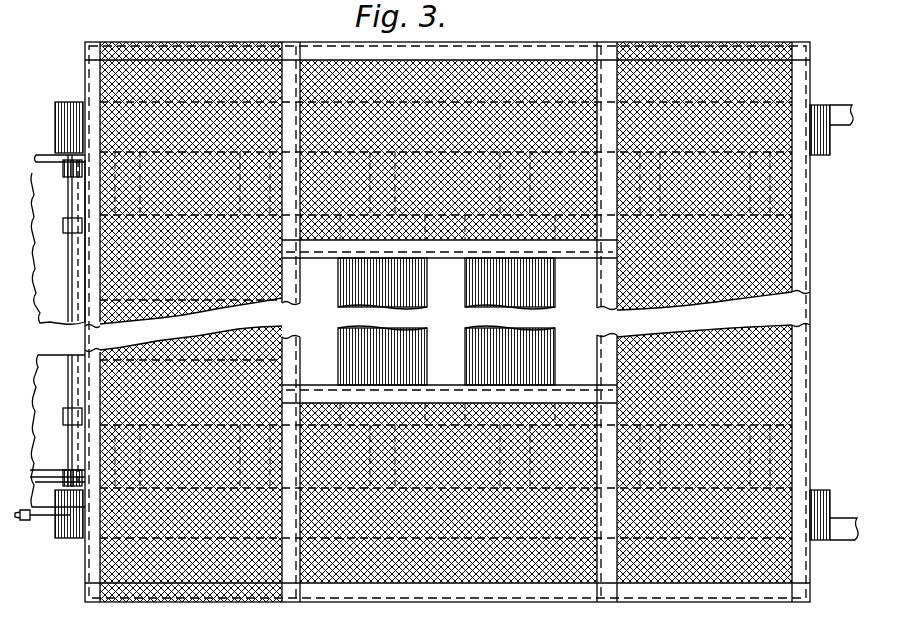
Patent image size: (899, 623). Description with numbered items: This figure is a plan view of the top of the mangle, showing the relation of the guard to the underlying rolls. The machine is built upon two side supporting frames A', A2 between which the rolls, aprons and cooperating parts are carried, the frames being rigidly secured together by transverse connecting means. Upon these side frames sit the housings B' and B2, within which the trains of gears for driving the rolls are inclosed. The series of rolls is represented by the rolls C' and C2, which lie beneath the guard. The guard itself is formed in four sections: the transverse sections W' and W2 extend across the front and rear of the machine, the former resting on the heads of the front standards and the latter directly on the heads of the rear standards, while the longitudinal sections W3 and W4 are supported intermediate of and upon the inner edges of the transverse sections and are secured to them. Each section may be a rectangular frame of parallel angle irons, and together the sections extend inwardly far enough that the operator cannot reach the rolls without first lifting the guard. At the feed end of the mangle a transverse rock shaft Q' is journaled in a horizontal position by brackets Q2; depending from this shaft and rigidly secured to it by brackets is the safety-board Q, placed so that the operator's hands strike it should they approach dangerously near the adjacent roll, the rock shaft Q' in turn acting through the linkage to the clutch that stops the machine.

The front transverse guard section W' is at (191, 303).
The rear transverse guard section W2 is at (682, 78).
The longitudinal guard section W3 is at (370, 556).
The longitudinal guard section W4 is at (548, 62).
The side supporting frame A' is at (841, 87).
The housing B' is at (831, 149).
The side supporting frame A2 is at (852, 522).
The housing B2 is at (830, 490).
The roll C' is at (191, 336).
The roll C2 is at (262, 343).
The safety-board Q is at (61, 323).
The transverse rock shaft Q' is at (57, 321).
The bracket Q2 is at (66, 175).